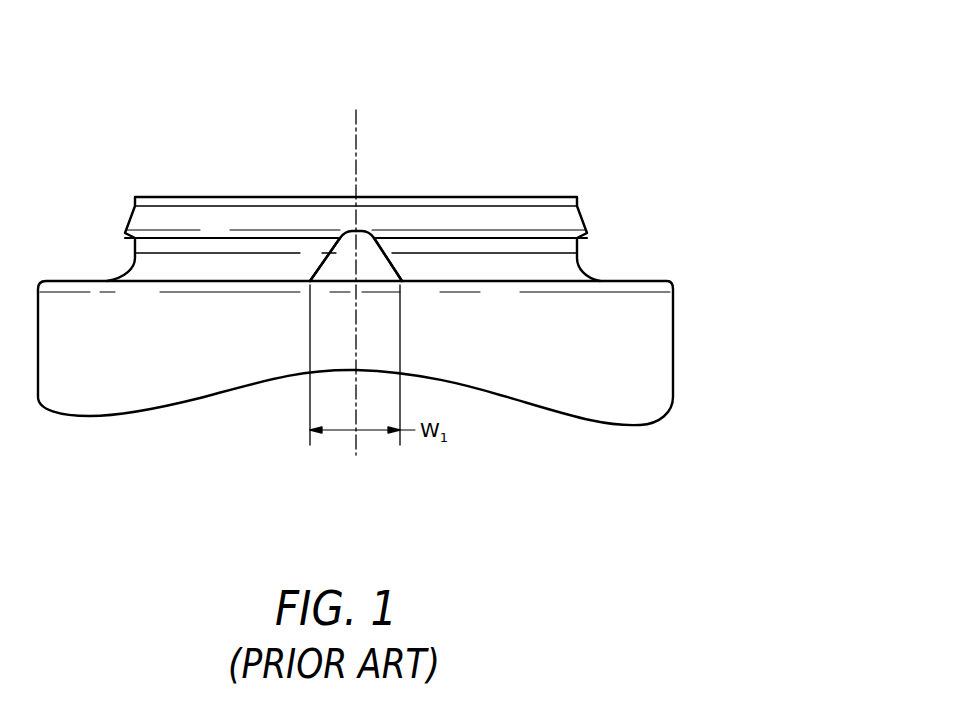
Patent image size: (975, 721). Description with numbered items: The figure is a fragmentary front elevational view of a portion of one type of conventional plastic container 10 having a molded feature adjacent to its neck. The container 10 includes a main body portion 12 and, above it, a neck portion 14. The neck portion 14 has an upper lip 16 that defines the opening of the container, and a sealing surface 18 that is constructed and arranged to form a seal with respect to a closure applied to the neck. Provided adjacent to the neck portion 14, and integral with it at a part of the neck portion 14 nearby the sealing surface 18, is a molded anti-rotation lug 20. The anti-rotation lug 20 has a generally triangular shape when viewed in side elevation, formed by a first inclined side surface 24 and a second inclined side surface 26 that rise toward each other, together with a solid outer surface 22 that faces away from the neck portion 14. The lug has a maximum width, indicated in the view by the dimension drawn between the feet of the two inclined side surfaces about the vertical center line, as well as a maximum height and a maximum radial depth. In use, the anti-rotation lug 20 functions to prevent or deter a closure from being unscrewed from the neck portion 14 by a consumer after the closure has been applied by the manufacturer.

The conventional plastic container 10 is at (609, 115).
The main body portion 12 is at (675, 335).
The neck portion 14 is at (582, 263).
The upper lip 16 is at (467, 197).
The sealing surface 18 is at (577, 218).
The anti-rotation lug 20 is at (345, 272).
The solid outer surface 22 is at (367, 272).
The first inclined side surface 24 is at (320, 262).
The second inclined side surface 26 is at (383, 250).